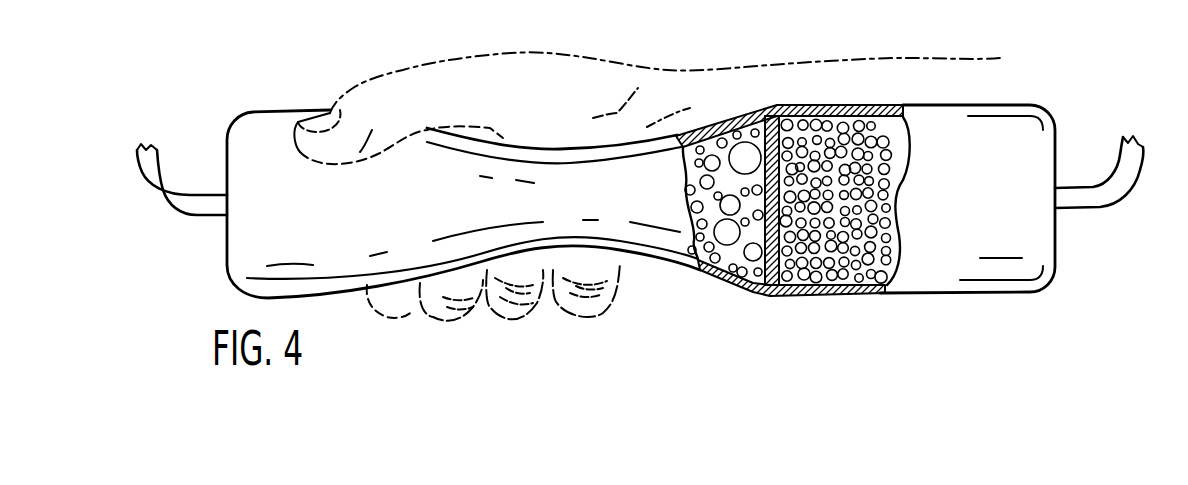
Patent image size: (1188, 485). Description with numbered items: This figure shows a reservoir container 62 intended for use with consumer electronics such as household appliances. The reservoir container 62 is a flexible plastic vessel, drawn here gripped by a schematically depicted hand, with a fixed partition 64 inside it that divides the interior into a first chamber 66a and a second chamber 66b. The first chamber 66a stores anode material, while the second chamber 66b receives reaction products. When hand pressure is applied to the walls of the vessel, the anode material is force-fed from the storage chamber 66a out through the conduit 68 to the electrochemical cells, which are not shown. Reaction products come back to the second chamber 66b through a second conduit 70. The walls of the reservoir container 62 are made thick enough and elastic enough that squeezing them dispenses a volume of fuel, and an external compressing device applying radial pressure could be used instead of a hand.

The reservoir container 62 is at (658, 268).
The fixed partition 64 is at (750, 296).
The first chamber 66a is at (742, 140).
The second chamber 66b is at (878, 135).
The conduit 68 is at (157, 198).
The second conduit 70 is at (1120, 195).